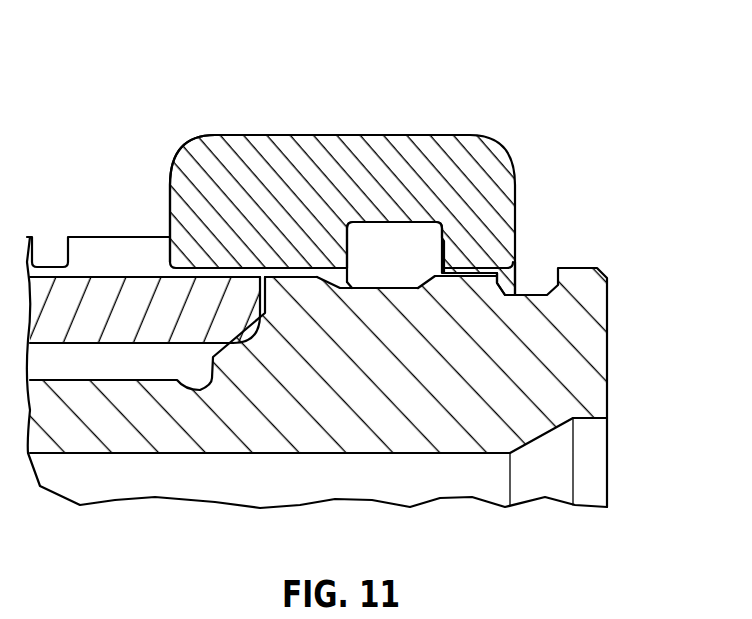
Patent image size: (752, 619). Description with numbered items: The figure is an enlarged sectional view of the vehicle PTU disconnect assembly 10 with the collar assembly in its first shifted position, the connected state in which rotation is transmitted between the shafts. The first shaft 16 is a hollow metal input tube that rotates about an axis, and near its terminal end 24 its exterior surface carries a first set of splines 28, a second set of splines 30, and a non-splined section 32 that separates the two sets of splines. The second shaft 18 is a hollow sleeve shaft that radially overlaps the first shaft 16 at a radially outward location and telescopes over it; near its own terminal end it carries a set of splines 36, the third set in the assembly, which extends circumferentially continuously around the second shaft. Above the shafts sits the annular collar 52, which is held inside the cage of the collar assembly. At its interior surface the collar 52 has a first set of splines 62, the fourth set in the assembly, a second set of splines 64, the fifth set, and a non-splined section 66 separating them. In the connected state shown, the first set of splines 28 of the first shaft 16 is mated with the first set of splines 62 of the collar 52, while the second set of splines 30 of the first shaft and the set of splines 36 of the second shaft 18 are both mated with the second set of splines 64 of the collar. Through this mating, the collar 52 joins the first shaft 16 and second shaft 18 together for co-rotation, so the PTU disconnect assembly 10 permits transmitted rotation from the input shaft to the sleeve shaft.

The PTU disconnect assembly 10 is at (316, 122).
The first shaft 16 is at (128, 456).
The second shaft 18 is at (97, 292).
The terminal end 24 is at (606, 328).
The first set of splines 28 is at (463, 275).
The second set of splines 30 is at (295, 272).
The non-splined section 32 is at (398, 286).
The set of splines 36 is at (138, 262).
The collar 52 is at (455, 174).
The first set of splines 62 is at (478, 252).
The second set of splines 64 is at (232, 256).
The non-splined section 66 is at (411, 226).